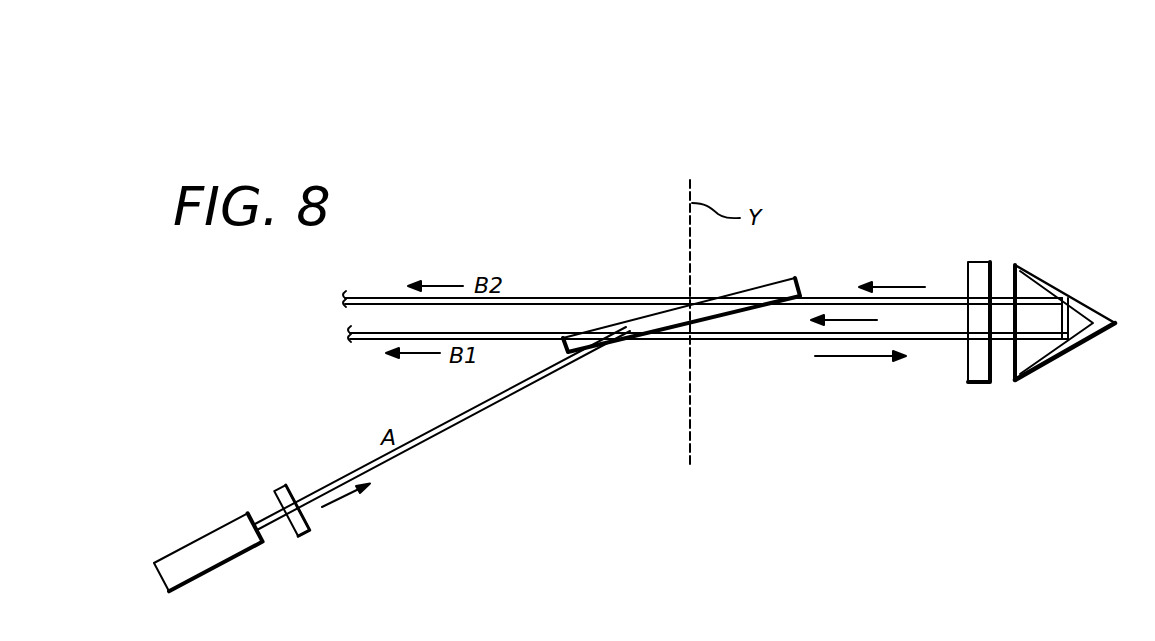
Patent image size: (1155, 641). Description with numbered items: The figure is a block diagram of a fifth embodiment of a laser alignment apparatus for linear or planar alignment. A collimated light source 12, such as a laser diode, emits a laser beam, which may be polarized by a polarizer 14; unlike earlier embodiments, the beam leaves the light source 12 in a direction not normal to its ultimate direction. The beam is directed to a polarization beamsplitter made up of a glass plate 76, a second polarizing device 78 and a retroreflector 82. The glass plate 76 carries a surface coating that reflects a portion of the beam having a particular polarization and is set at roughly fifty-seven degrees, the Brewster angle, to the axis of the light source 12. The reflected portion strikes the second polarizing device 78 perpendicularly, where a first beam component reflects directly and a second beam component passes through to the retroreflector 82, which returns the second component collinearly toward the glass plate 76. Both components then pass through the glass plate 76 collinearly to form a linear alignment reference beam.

The collimated light source 12 is at (217, 528).
The polarizer 14 is at (303, 536).
The glass plate 76 is at (603, 326).
The second polarizing device 78 is at (982, 262).
The retroreflector 82 is at (1056, 358).